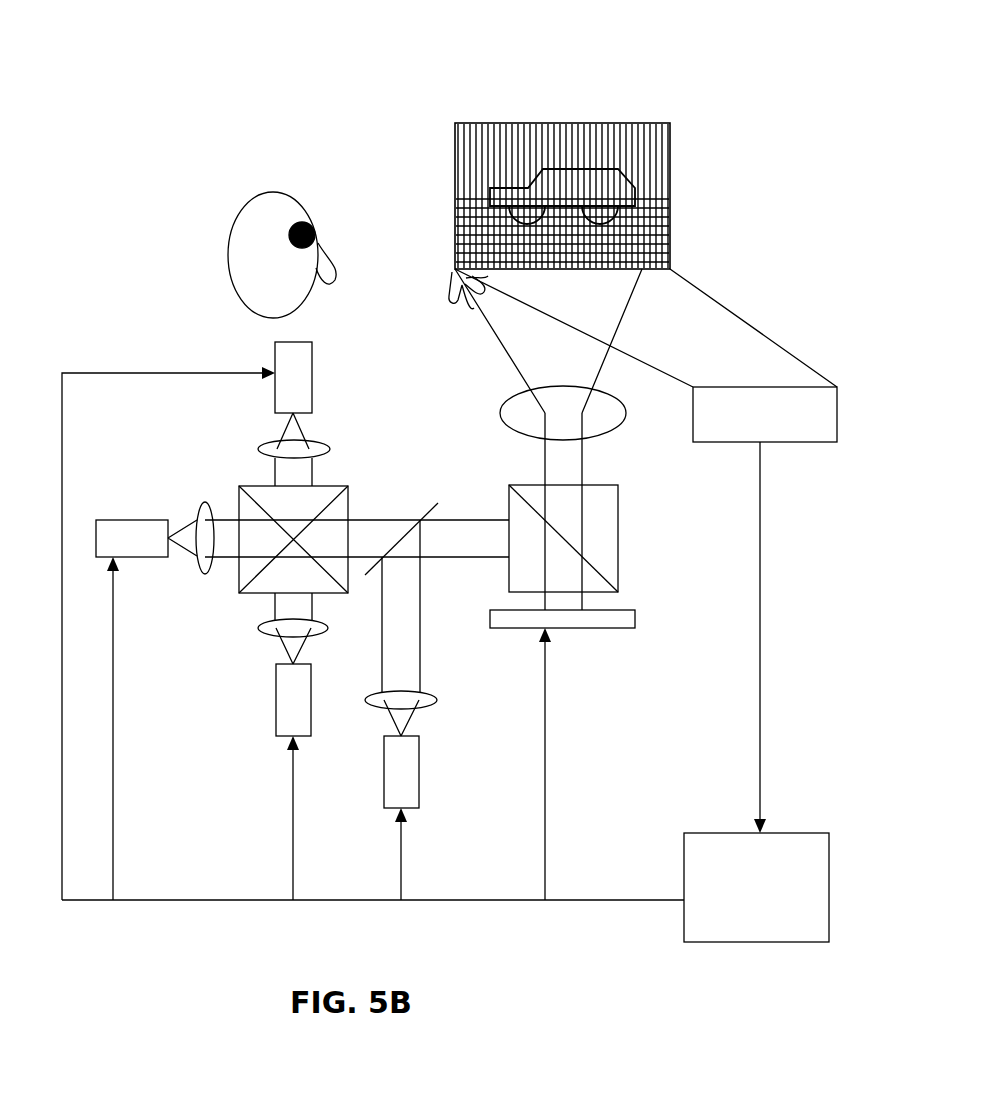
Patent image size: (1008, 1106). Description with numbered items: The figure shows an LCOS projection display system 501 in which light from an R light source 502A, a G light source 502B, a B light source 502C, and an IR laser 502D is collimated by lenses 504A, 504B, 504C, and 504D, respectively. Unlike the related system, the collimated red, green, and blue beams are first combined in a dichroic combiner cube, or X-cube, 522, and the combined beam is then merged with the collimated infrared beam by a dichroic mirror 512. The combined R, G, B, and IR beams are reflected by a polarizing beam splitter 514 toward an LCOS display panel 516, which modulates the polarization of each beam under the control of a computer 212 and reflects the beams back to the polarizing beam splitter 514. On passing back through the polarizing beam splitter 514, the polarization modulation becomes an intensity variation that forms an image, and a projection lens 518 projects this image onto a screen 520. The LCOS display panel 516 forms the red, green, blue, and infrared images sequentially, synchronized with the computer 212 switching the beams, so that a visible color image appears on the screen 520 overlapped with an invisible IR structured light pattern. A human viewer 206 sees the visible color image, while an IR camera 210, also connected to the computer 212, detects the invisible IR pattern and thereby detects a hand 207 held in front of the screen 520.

The LCOS projection display system 501 is at (328, 80).
The screen 520 is at (500, 123).
The human viewer 206 is at (232, 233).
The hand 207 is at (448, 286).
The R light source 502A is at (312, 356).
The G light source 502B is at (116, 520).
The B light source 502C is at (311, 738).
The IR laser 502D is at (417, 808).
The lens 504A is at (324, 446).
The lens 504B is at (197, 564).
The lens 504C is at (260, 632).
The lens 504D is at (430, 700).
The dichroic combiner cube (X-cube) 522 is at (243, 486).
The dichroic mirror 512 is at (428, 504).
The polarizing beam splitter (PBS) 514 is at (618, 506).
The LCOS display panel 516 is at (630, 610).
The projection lens 518 is at (508, 402).
The IR camera 210 is at (837, 412).
The computer 212 is at (829, 870).